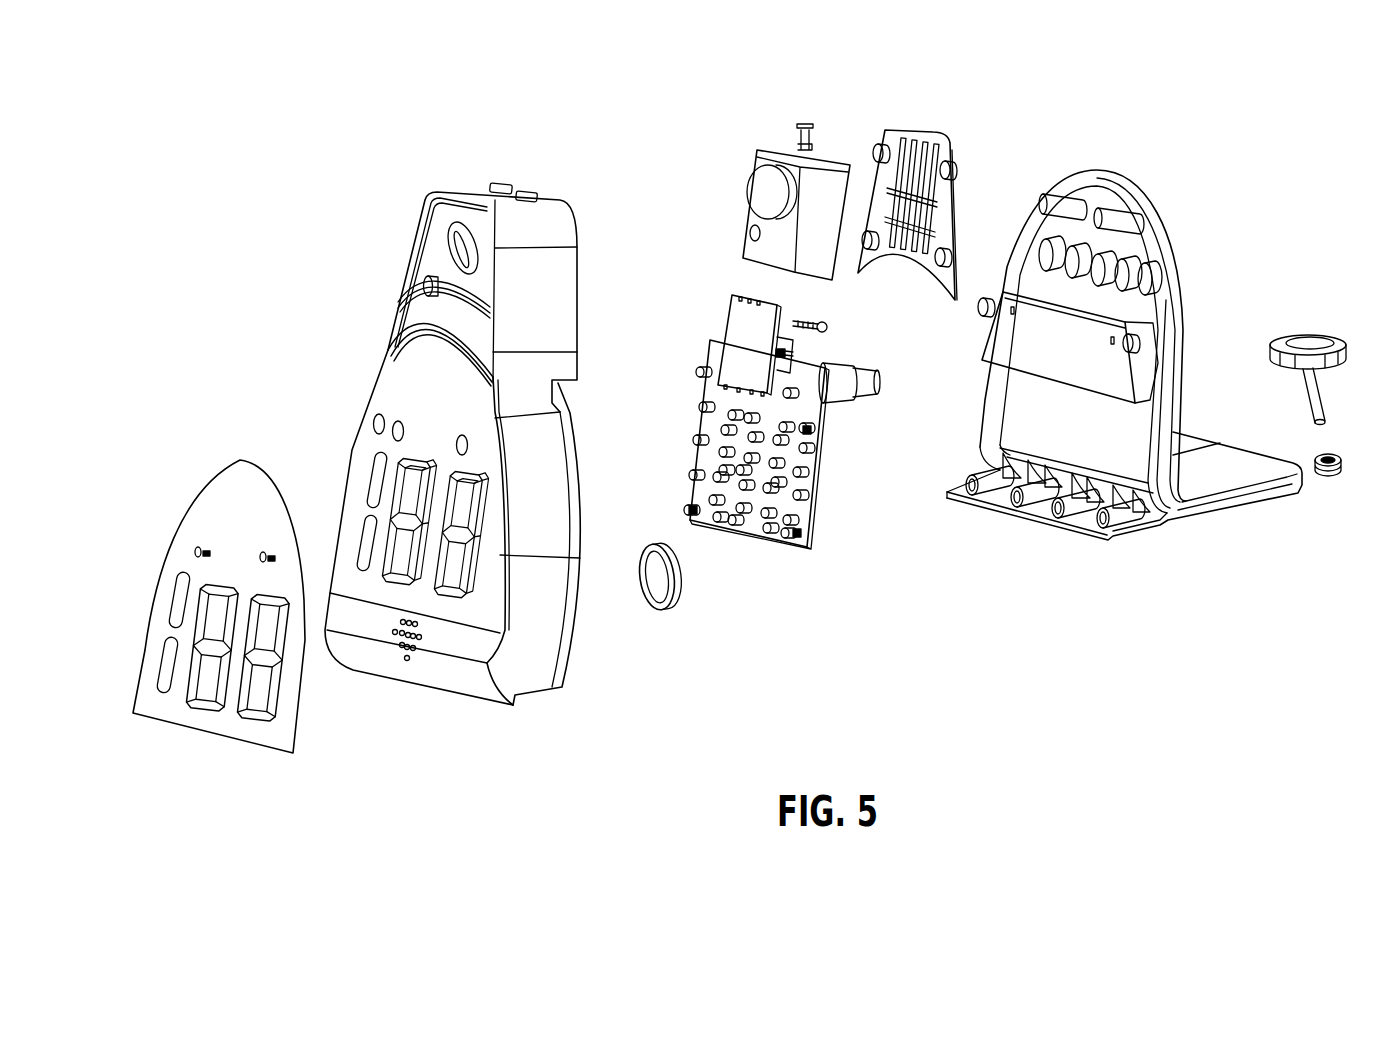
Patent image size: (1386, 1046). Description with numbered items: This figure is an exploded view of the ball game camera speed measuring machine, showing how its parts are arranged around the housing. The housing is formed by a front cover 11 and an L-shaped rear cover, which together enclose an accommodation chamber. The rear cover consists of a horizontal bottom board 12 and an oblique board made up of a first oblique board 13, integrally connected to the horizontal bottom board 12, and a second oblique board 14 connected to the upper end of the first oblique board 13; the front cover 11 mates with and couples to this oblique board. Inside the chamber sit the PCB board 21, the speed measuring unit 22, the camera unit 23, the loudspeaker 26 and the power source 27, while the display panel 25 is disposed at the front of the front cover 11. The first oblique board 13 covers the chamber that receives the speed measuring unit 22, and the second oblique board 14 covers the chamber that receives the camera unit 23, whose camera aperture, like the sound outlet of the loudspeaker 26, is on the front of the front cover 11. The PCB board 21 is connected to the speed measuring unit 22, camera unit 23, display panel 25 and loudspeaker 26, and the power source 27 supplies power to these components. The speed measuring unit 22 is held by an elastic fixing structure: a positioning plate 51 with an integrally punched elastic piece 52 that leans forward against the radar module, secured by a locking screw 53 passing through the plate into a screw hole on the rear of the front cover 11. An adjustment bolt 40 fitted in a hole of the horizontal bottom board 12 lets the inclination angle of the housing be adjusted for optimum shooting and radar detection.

The front cover 11 is at (390, 320).
The horizontal bottom board 12 is at (1253, 497).
The first oblique board 13 is at (1170, 250).
The second oblique board 14 is at (957, 190).
The PCB board 21 is at (802, 547).
The speed measuring unit 22 is at (720, 320).
The camera unit 23 is at (760, 160).
The display panel 25 is at (217, 472).
The loudspeaker 26 is at (677, 597).
The power source 27 is at (1160, 350).
The adjustment bolt 40 is at (1308, 336).
The positioning plate 51 is at (793, 349).
The elastic piece 52 is at (826, 323).
The locking screw 53 is at (800, 358).